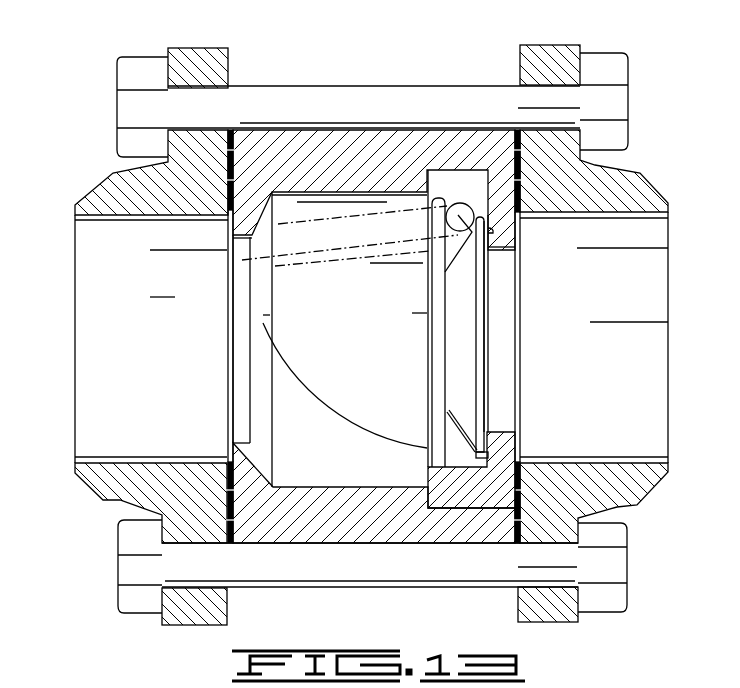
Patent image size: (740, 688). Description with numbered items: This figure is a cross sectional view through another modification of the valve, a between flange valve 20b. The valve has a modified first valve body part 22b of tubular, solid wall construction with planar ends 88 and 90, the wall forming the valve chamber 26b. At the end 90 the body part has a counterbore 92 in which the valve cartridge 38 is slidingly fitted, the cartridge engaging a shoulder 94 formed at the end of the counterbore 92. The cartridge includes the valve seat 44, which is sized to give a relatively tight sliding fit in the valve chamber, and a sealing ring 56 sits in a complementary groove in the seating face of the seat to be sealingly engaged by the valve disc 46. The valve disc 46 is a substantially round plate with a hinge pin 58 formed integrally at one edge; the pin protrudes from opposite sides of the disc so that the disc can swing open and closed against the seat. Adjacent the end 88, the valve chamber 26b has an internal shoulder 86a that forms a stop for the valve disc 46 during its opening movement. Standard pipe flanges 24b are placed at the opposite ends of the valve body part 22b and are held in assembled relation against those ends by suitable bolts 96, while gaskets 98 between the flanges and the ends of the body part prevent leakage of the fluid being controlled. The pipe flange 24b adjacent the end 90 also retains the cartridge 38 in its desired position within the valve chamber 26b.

The between flange valve 20b is at (168, 48).
The first valve body part 22b is at (322, 150).
The pipe flange 24b is at (110, 180).
The valve chamber 26b is at (363, 308).
The valve cartridge 38 is at (428, 377).
The valve seat 44 is at (522, 452).
The valve disc 46 is at (458, 334).
The sealing ring 56 is at (520, 425).
The hinge pin 58 is at (507, 258).
The internal shoulder 86a is at (240, 452).
The planar end 88 is at (238, 138).
The planar end 90 is at (508, 137).
The counterbore 92 is at (473, 508).
The shoulder 94 is at (398, 545).
The bolts 96 is at (562, 98).
The gaskets 98 is at (227, 333).